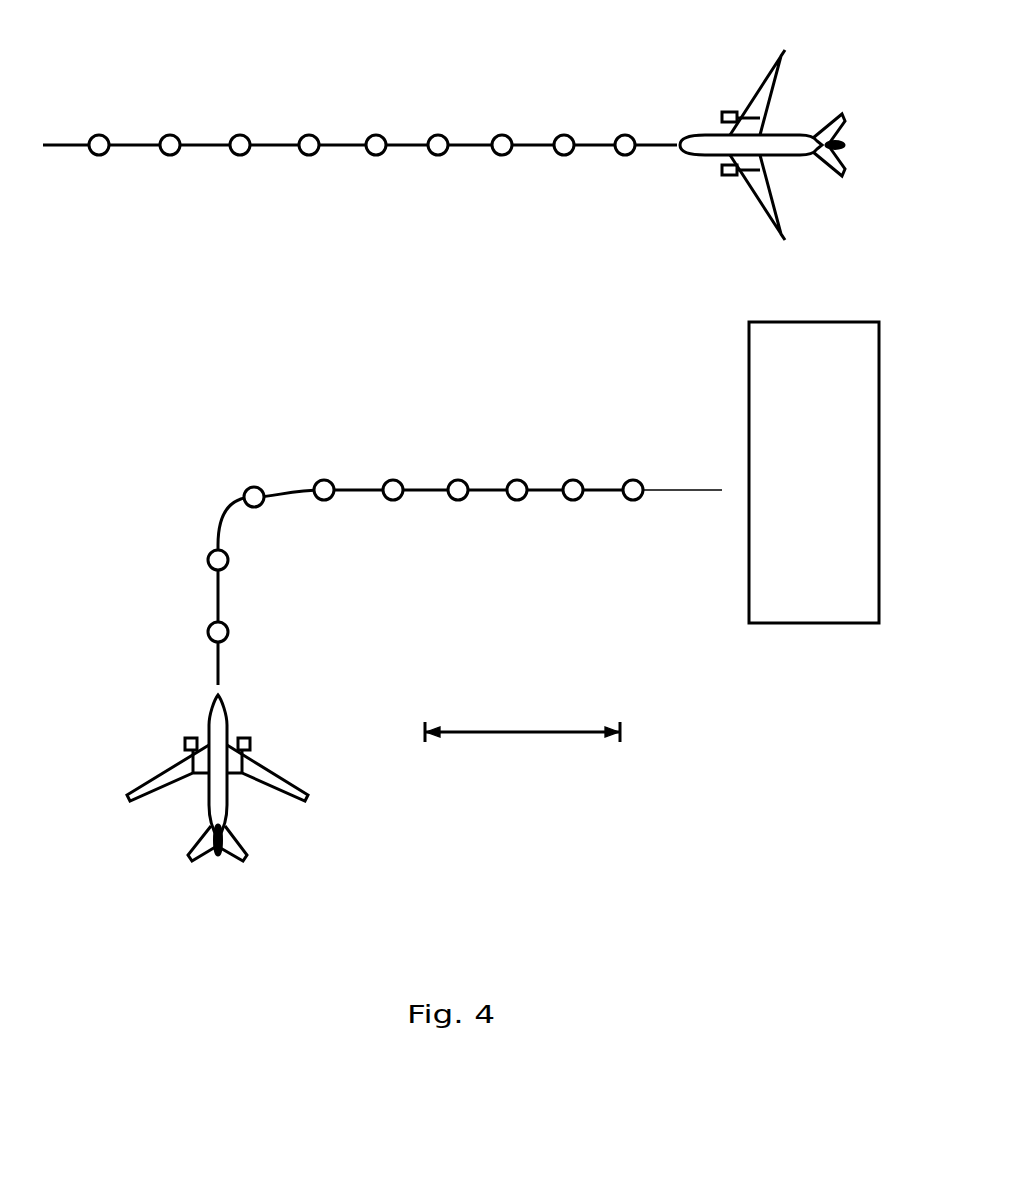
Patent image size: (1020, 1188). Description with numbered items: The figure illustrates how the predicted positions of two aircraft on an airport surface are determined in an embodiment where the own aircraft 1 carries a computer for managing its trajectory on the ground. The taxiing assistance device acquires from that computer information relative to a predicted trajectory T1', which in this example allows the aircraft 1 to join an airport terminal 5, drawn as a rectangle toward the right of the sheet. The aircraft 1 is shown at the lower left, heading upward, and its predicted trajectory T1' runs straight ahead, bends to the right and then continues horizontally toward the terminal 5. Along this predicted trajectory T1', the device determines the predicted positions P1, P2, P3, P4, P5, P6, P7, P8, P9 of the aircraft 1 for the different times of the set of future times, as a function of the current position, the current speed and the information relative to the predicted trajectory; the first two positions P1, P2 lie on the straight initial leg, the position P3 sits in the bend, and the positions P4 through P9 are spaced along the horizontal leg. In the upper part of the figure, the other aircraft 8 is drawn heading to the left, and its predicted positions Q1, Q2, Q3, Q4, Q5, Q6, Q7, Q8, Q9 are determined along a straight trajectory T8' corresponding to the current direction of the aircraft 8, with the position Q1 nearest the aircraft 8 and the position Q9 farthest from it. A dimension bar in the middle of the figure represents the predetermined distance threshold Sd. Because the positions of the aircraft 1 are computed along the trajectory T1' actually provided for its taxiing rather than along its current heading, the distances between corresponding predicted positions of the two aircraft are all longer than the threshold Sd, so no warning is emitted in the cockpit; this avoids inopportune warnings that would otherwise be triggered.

The aircraft 1 is at (227, 810).
The other aircraft 8 is at (762, 210).
The airport terminal 5 is at (818, 625).
The predetermined distance threshold Sd is at (552, 735).
The predicted trajectory T1' is at (470, 587).
The straight trajectory T8' is at (360, 184).
The predicted position P1 is at (181, 632).
The predicted position P2 is at (181, 560).
The predicted position P3 is at (234, 473).
The predicted position P4 is at (324, 459).
The predicted position P5 is at (393, 459).
The predicted position P6 is at (458, 459).
The predicted position P7 is at (517, 459).
The predicted position P8 is at (573, 459).
The predicted position P9 is at (633, 459).
The predicted position Q1 is at (625, 110).
The predicted position Q2 is at (564, 110).
The predicted position Q3 is at (502, 110).
The predicted position Q4 is at (438, 110).
The predicted position Q5 is at (376, 110).
The predicted position Q6 is at (309, 110).
The predicted position Q7 is at (240, 110).
The predicted position Q8 is at (170, 110).
The predicted position Q9 is at (99, 110).